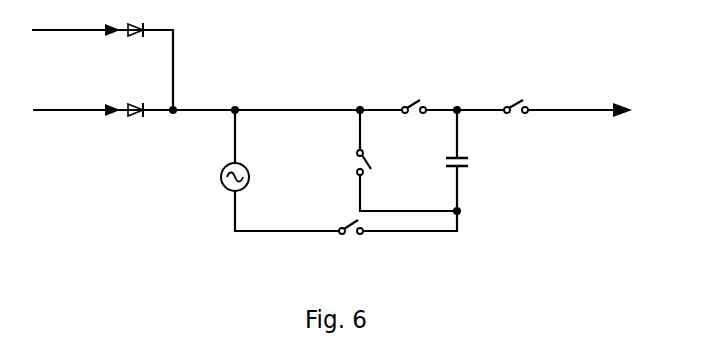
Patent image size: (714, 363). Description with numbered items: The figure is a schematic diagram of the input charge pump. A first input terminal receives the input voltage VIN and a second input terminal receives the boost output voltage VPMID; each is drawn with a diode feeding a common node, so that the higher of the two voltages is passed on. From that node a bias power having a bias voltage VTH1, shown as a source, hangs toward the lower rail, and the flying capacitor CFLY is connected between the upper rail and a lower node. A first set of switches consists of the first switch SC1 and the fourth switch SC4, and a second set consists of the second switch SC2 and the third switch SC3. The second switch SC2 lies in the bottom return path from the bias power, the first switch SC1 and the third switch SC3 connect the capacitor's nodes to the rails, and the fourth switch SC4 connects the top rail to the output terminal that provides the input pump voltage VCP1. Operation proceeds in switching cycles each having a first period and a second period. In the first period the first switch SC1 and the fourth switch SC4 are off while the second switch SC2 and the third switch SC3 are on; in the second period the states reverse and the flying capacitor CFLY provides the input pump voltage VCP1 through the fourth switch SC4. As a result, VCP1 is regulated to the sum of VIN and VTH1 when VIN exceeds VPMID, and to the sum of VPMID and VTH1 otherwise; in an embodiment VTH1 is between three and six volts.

The input voltage VIN is at (102, 58).
The boost output voltage VPMID is at (217, 101).
The bias voltage VTH1 is at (248, 170).
The first switch SC1 is at (388, 160).
The second switch SC2 is at (399, 234).
The third switch SC3 is at (449, 95).
The fourth switch SC4 is at (515, 95).
The flying capacitor CFLY is at (483, 160).
The input pump voltage VCP1 is at (581, 97).